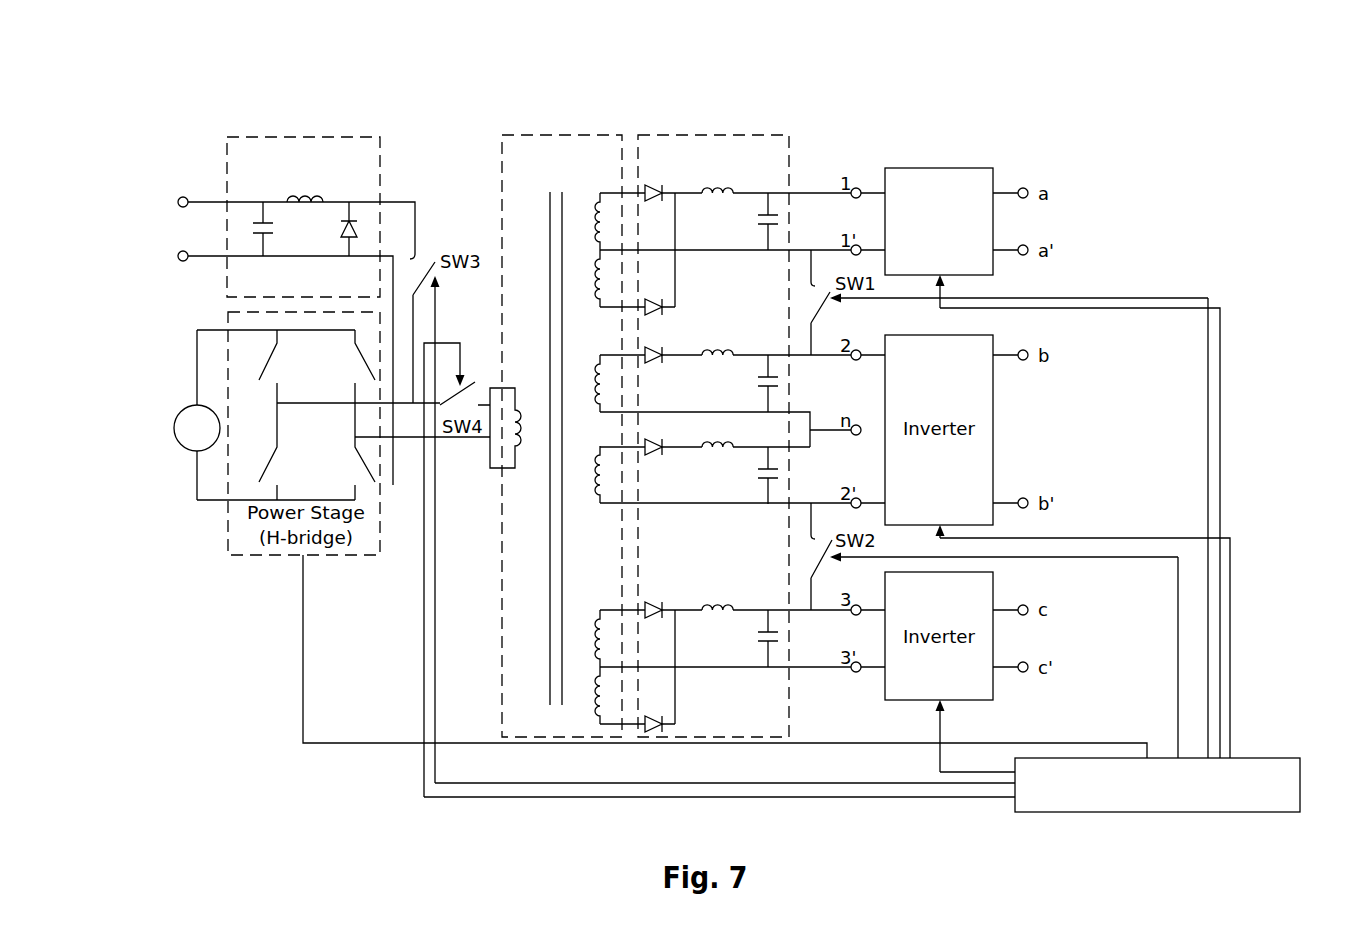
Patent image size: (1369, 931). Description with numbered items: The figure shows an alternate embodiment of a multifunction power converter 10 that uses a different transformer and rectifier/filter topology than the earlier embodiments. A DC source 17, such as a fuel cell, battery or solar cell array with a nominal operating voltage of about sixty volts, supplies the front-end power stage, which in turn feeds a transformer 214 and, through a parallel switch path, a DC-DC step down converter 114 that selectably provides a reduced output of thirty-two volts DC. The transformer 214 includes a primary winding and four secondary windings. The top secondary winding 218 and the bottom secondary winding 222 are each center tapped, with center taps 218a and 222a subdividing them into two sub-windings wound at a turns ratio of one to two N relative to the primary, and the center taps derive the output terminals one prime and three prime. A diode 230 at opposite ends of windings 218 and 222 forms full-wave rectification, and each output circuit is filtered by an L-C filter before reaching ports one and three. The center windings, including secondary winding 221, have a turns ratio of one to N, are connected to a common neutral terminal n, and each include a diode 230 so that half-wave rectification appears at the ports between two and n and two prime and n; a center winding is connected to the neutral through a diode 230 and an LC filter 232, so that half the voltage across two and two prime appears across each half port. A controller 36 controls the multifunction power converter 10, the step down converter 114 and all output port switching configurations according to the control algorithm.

The multifunction power converter 10 is at (1083, 199).
The DC source 17 is at (179, 411).
The controller 36 is at (1263, 752).
The DC-DC step down converter 114 is at (317, 133).
The transformer 214 is at (532, 400).
The secondary winding 218 is at (596, 277).
The center tap 218a is at (598, 250).
The secondary winding 221 is at (705, 402).
The secondary winding 222 is at (597, 692).
The center tap 222a is at (600, 666).
The diode 230 is at (655, 456).
The LC filter 232 is at (765, 184).